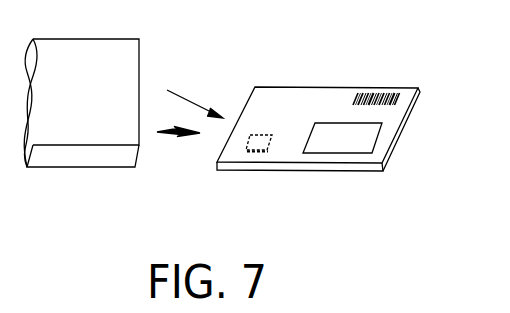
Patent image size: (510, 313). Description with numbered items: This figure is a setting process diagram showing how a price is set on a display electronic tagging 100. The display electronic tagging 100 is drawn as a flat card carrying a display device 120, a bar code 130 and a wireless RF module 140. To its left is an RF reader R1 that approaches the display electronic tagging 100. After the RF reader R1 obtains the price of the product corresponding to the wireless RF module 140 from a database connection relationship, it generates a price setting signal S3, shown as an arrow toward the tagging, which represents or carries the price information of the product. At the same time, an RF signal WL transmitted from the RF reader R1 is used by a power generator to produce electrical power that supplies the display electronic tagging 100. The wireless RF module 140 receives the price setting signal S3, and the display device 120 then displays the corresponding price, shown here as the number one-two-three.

The RF reader R1 is at (80, 168).
The price setting signal S3 is at (195, 90).
The RF signal WL is at (178, 150).
The display electronic tagging 100 is at (398, 137).
The display device 120 is at (311, 138).
The bar code 130 is at (396, 90).
The wireless RF module 140 is at (257, 152).